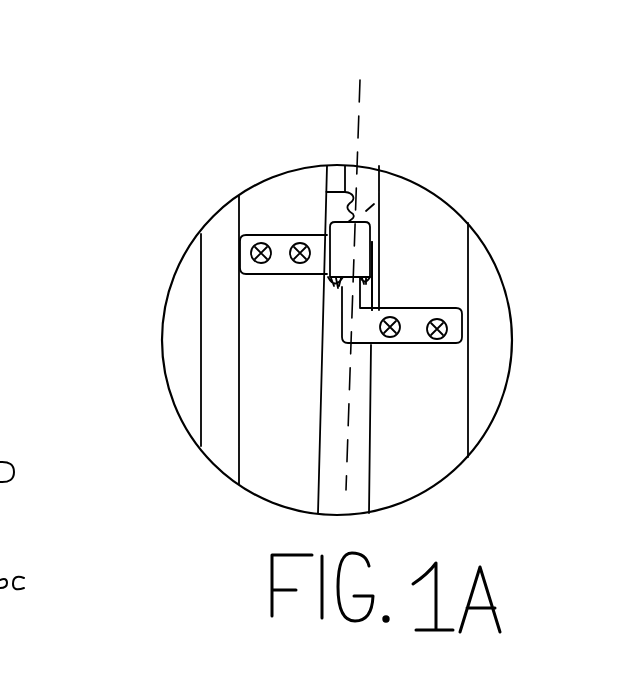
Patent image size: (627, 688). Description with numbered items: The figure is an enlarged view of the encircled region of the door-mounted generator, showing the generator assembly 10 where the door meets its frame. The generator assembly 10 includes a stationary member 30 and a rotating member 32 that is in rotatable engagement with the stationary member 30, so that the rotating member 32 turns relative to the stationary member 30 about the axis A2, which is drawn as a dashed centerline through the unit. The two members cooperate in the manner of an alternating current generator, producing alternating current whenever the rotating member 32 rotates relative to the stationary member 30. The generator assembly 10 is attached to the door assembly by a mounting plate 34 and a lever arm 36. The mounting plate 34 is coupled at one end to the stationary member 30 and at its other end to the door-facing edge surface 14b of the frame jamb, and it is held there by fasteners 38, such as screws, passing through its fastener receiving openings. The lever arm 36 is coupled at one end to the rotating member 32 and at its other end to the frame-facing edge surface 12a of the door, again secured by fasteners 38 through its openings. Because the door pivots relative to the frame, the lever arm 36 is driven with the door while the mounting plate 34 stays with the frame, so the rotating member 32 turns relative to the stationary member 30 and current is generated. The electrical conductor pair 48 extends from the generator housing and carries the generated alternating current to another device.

The generator assembly 10 is at (374, 206).
The frame-facing edge surface 12a is at (453, 255).
The door-facing edge surface 14b is at (268, 330).
The stationary member 30 is at (380, 240).
The rotating member 32 is at (331, 290).
The mounting plate 34 is at (280, 238).
The lever arm 36 is at (422, 343).
The fasteners 38 is at (255, 251).
The electrical conductor pair 48 is at (345, 166).
The axis A2 is at (360, 92).